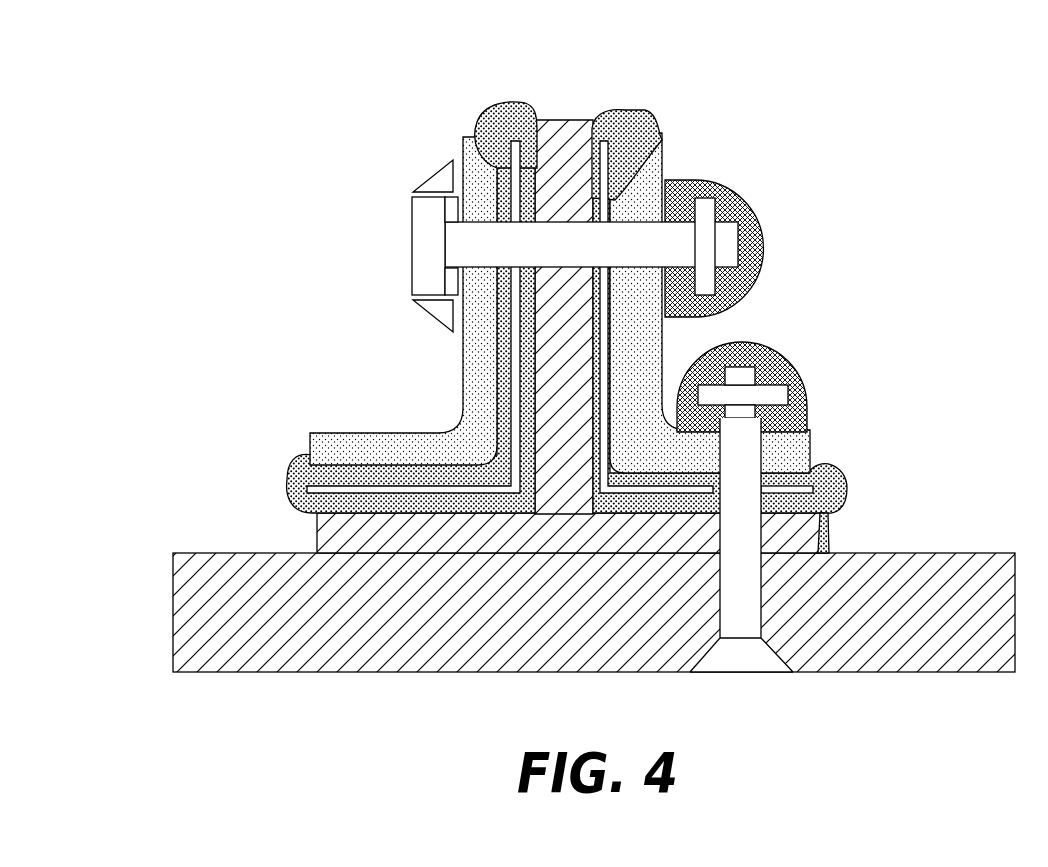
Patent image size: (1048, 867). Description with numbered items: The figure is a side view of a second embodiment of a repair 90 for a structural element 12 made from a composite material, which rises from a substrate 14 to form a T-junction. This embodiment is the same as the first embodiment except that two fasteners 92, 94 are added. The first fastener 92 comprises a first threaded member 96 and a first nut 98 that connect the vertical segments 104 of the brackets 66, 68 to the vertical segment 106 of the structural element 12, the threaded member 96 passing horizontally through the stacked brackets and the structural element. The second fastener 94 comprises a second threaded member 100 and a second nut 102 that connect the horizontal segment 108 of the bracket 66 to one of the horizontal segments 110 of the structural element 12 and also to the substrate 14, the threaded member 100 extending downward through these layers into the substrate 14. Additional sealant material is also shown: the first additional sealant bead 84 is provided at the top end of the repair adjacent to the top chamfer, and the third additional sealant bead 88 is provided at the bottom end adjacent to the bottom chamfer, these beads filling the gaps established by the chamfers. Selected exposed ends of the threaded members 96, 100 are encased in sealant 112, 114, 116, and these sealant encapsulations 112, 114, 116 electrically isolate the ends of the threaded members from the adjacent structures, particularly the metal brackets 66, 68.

The structural element 12 is at (572, 172).
The substrate 14 is at (203, 602).
The bracket 66 is at (672, 160).
The bracket 68 is at (280, 435).
The first additional sealant bead 84 is at (500, 120).
The third additional sealant bead 88 is at (290, 475).
The repair 90 is at (925, 257).
The first fastener 92 is at (382, 210).
The second fastener 94 is at (785, 697).
The first threaded member 96 is at (412, 245).
The first nut 98 is at (730, 193).
The second threaded member 100 is at (741, 643).
The second nut 102 is at (787, 362).
The vertical segment 104 is at (473, 170).
The vertical segment 106 is at (640, 130).
The horizontal segment 108 is at (347, 445).
The horizontal segment 110 is at (327, 513).
The sealant encapsulation 112 is at (808, 393).
The sealant encapsulation 114 is at (767, 233).
The sealant encapsulation 116 is at (433, 308).